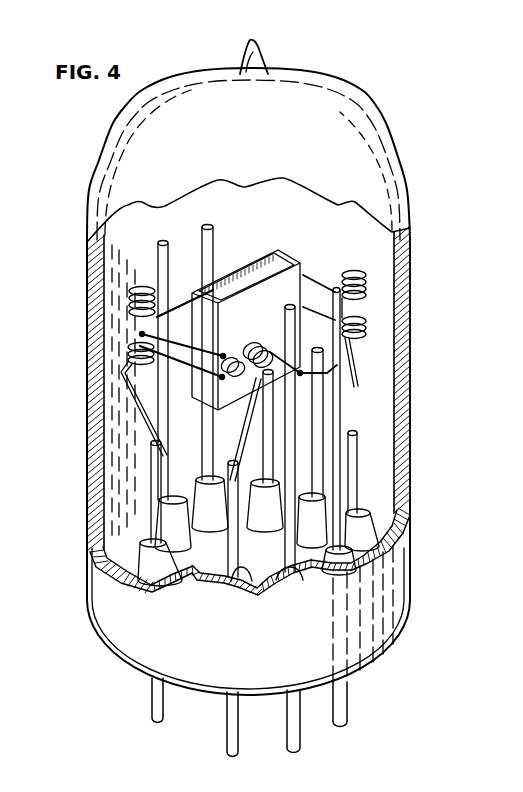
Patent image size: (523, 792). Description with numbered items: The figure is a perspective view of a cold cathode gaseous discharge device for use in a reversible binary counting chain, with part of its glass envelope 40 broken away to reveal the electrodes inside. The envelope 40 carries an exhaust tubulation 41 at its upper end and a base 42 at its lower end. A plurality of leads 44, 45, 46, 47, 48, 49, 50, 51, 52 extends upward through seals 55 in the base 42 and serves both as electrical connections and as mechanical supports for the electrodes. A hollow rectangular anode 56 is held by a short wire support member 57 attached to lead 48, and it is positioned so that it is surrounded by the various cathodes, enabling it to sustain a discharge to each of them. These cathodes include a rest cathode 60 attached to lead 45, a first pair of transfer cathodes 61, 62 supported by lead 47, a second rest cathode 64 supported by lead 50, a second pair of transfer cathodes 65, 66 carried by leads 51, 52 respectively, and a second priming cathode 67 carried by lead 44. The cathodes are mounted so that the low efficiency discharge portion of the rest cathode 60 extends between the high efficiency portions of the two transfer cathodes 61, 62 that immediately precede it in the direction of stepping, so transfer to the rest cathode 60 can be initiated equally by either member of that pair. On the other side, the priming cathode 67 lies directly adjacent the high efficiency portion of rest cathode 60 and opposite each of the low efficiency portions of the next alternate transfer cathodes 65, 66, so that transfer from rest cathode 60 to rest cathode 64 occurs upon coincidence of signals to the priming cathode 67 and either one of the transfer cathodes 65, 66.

The envelope 40 is at (398, 305).
The exhaust tubulation 41 is at (257, 56).
The base 42 is at (203, 568).
The lead 44 is at (272, 567).
The lead 45 is at (284, 544).
The lead 46 is at (352, 492).
The lead 47 is at (352, 462).
The lead 48 is at (322, 452).
The lead 49 is at (341, 433).
The lead 50 is at (215, 262).
The lead 51 is at (168, 400).
The lead 52 is at (163, 476).
The seals 55 is at (178, 542).
The hollow rectangular anode 56 is at (283, 254).
The short wire support member 57 is at (345, 405).
The rest cathode 60 is at (255, 347).
The transfer cathode 61 is at (309, 281).
The transfer cathode 62 is at (322, 306).
The second rest cathode 64 is at (178, 307).
The transfer cathode 65 is at (128, 306).
The transfer cathode 66 is at (128, 352).
The second priming cathode 67 is at (233, 382).